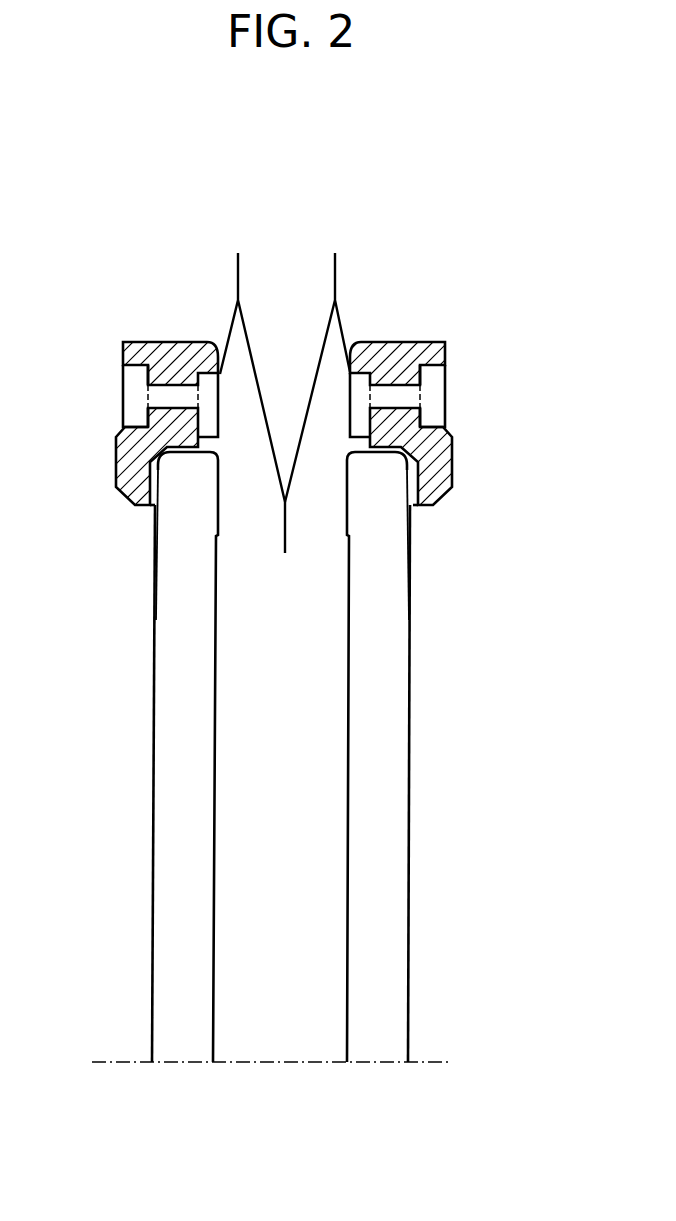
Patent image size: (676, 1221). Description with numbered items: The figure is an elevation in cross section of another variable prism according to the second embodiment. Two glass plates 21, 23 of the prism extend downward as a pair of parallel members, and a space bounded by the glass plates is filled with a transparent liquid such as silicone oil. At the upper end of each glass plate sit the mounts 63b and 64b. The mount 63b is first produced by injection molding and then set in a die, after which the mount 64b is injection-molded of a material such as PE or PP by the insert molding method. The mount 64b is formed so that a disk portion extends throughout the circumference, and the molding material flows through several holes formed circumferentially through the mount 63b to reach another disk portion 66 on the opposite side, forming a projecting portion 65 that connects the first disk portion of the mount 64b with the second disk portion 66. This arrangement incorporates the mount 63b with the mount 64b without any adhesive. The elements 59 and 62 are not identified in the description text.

The glass plate 21 is at (163, 707).
The glass plate 23 is at (402, 714).
The first blade 59 is at (238, 253).
The second blade 62 is at (335, 253).
The mount 63b is at (157, 345).
The mount 64b is at (217, 365).
The projecting portion 65 is at (140, 387).
The disk portion 66 is at (128, 416).